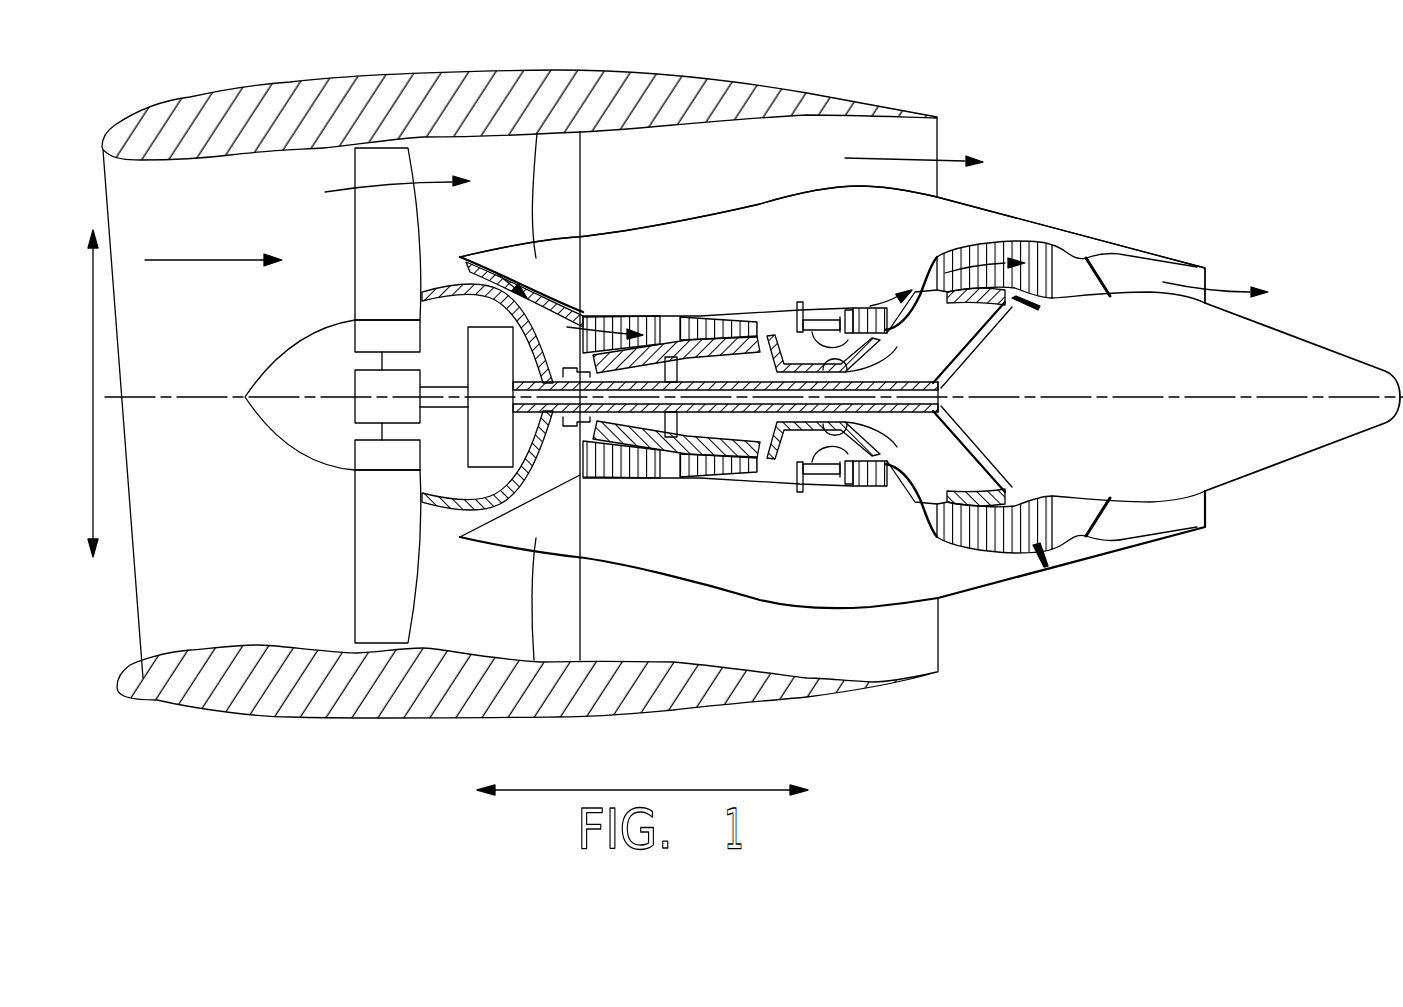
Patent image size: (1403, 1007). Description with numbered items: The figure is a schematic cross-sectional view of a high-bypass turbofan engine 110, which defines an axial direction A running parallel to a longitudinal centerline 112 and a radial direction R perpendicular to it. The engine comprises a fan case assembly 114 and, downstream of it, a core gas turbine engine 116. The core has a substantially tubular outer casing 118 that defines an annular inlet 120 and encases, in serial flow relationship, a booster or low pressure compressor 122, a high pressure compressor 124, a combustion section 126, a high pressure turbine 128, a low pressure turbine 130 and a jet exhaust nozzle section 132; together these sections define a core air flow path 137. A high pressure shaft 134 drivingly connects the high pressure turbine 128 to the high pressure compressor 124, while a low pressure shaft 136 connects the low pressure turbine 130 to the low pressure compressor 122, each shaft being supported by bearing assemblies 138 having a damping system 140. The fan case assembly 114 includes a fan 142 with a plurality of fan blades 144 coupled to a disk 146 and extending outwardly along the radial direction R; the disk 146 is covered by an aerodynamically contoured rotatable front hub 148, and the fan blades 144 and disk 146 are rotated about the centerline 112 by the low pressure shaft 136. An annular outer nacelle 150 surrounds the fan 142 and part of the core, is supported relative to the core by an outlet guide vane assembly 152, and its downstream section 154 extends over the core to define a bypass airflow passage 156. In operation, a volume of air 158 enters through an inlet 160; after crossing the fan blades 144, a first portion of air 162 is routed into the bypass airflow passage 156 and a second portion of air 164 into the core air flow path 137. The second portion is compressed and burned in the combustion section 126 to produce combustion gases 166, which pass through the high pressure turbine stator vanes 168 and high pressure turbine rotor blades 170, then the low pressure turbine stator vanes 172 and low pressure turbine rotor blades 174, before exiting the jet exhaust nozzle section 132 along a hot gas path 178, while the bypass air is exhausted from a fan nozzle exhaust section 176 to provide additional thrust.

The turbofan engine 110 is at (745, 417).
The longitudinal centerline 112 is at (1140, 393).
The fan case assembly 114 is at (311, 354).
The core gas turbine engine 116 is at (762, 272).
The outer casing 118 is at (770, 595).
The annular inlet 120 is at (455, 526).
The low pressure compressor 122 is at (521, 553).
The high pressure compressor 124 is at (617, 485).
The combustion section 126 is at (815, 490).
The high pressure turbine 128 is at (913, 397).
The low pressure turbine 130 is at (1004, 432).
The jet exhaust nozzle section 132 is at (1108, 530).
The high pressure shaft 134 is at (870, 360).
The low pressure shaft 136 is at (968, 354).
The core air flow path 137 is at (557, 505).
The bearing assemblies 138 is at (694, 342).
The damping system 140 is at (664, 358).
The fan 142 is at (262, 409).
The fan blades 144 is at (350, 576).
The disk 146 is at (372, 337).
The rotatable front hub 148 is at (263, 417).
The outer nacelle 150 is at (405, 718).
The outlet guide vane assembly 152 is at (582, 182).
The downstream section of nacelle 154 is at (820, 95).
The bypass airflow passage 156 is at (738, 171).
The volume of air 158 is at (212, 260).
The inlet 160 is at (117, 688).
The first portion of air 162 is at (366, 192).
The second portion of air 164 is at (440, 268).
The combustion gases 166 is at (873, 305).
The HP turbine stator vanes 168 is at (838, 478).
The HP turbine rotor blades 170 is at (863, 455).
The LP turbine stator vanes 172 is at (950, 541).
The LP turbine rotor blades 174 is at (957, 548).
The fan nozzle exhaust section 176 is at (943, 140).
The hot gas path 178 is at (918, 262).
The radial direction R is at (104, 373).
The axial direction A is at (646, 790).